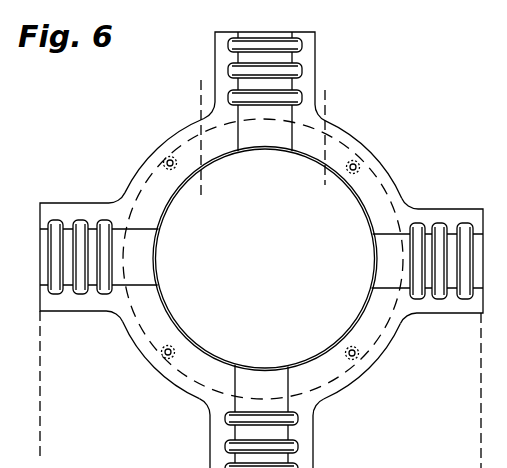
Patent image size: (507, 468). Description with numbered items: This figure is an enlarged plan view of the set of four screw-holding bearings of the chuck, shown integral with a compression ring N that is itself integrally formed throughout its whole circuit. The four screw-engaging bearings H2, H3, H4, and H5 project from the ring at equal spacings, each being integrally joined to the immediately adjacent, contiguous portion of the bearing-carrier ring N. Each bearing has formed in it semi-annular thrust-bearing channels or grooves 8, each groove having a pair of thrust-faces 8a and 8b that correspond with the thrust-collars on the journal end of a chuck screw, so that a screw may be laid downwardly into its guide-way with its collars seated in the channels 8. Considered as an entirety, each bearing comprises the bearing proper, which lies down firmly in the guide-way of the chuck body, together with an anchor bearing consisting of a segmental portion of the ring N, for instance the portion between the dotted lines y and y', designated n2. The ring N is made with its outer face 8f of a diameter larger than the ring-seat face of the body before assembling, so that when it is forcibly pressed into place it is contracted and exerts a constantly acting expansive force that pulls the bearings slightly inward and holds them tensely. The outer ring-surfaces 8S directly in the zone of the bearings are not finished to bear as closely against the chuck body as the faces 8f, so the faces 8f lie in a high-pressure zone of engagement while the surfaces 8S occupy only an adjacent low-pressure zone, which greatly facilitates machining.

The outer ring-surfaces 8S is at (376, 152).
The outer face of the ring 8f is at (390, 345).
The compression ring N is at (181, 330).
The segmental portion of the ring n2 is at (225, 152).
The dotted line y is at (199, 154).
The dotted line y' is at (322, 160).
The screw-engaging bearing H2 is at (82, 203).
The screw-engaging bearing H3 is at (315, 63).
The screw-engaging bearing H4 is at (441, 209).
The screw-engaging bearing H5 is at (313, 441).
The semi-annular thrust-bearing channel 8 is at (104, 295).
The thrust-face 8a is at (411, 222).
The thrust-face 8b is at (425, 223).